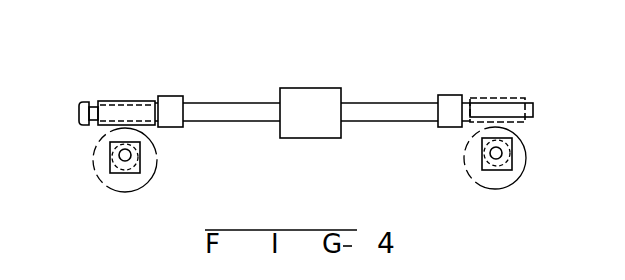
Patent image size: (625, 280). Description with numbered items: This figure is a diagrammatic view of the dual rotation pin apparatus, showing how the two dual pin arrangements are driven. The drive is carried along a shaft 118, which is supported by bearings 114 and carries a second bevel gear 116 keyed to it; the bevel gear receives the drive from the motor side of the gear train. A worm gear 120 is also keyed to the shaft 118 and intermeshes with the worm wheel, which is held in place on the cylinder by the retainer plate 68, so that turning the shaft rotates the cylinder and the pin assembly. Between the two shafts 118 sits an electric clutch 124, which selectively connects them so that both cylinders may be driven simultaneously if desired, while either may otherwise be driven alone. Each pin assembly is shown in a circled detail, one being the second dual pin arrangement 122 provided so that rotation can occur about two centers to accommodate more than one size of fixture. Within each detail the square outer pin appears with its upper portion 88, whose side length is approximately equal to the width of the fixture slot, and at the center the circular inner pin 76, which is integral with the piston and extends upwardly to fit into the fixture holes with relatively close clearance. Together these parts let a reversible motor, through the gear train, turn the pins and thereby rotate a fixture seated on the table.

The second bevel gear 116 is at (83, 101).
The worm gear 120 is at (136, 101).
The bearings 114 is at (168, 96).
The shaft 118 is at (245, 103).
The electric clutch 124 is at (318, 88).
The second dual pin arrangement 122 is at (130, 187).
The retainer plate 68 is at (155, 168).
The upper portion 88 is at (142, 160).
The inner pin portion 76 is at (122, 158).